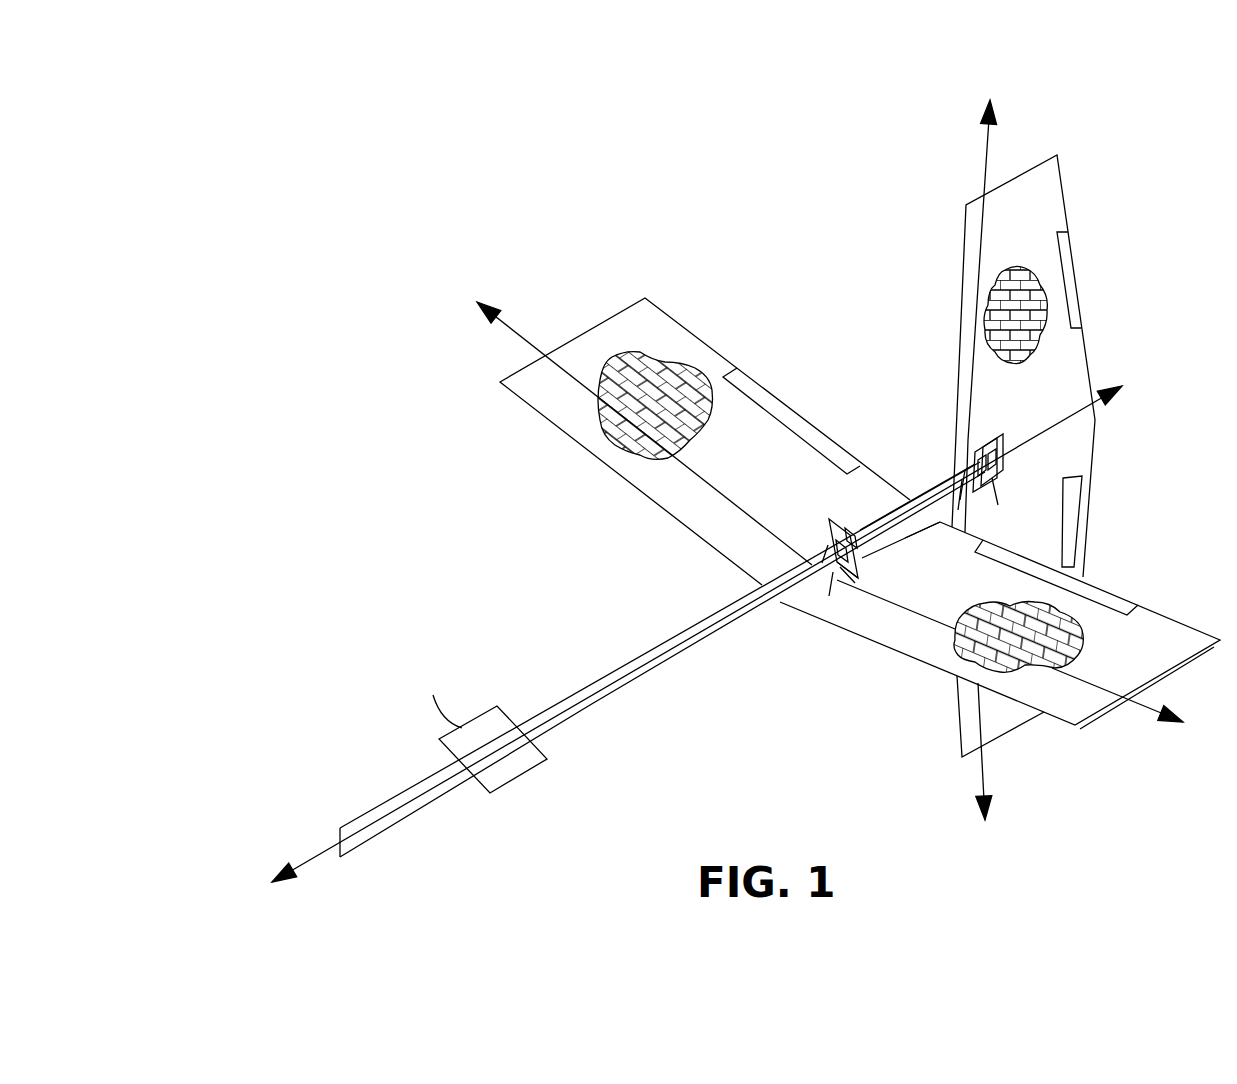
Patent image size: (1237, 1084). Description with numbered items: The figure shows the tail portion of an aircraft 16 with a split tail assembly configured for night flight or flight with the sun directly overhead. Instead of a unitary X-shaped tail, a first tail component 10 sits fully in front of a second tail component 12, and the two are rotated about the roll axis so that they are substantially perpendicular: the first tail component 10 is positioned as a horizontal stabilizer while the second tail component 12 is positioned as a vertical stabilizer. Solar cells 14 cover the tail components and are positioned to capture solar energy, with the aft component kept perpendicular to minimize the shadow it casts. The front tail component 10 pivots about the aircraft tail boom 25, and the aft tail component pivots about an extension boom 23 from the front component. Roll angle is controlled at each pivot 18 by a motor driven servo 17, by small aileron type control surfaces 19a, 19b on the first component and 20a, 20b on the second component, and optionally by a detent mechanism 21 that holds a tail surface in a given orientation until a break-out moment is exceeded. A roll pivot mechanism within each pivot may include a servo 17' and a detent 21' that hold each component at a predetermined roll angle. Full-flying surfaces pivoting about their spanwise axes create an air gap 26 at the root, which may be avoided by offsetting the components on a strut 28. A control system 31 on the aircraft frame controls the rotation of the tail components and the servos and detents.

The first tail component 10 is at (928, 645).
The second tail component 12 is at (1067, 362).
The solar cells 14 is at (628, 432).
The aircraft 16 is at (405, 855).
The servo 17 is at (916, 491).
The servo of roll pivot mechanism 17' is at (941, 539).
The pivot 18 is at (840, 536).
The aileron type control surface 19a is at (797, 424).
The aileron type control surface 19b is at (1105, 598).
The aileron type control surface 20a is at (1070, 273).
The aileron type control surface 20b is at (1078, 508).
The detent mechanism 21 is at (860, 493).
The detent of roll pivot mechanism 21' is at (953, 525).
The extension boom 23 is at (922, 498).
The aircraft tail boom 25 is at (683, 650).
The air gap 26 is at (925, 520).
The strut 28 is at (843, 590).
The control system 31 is at (517, 775).